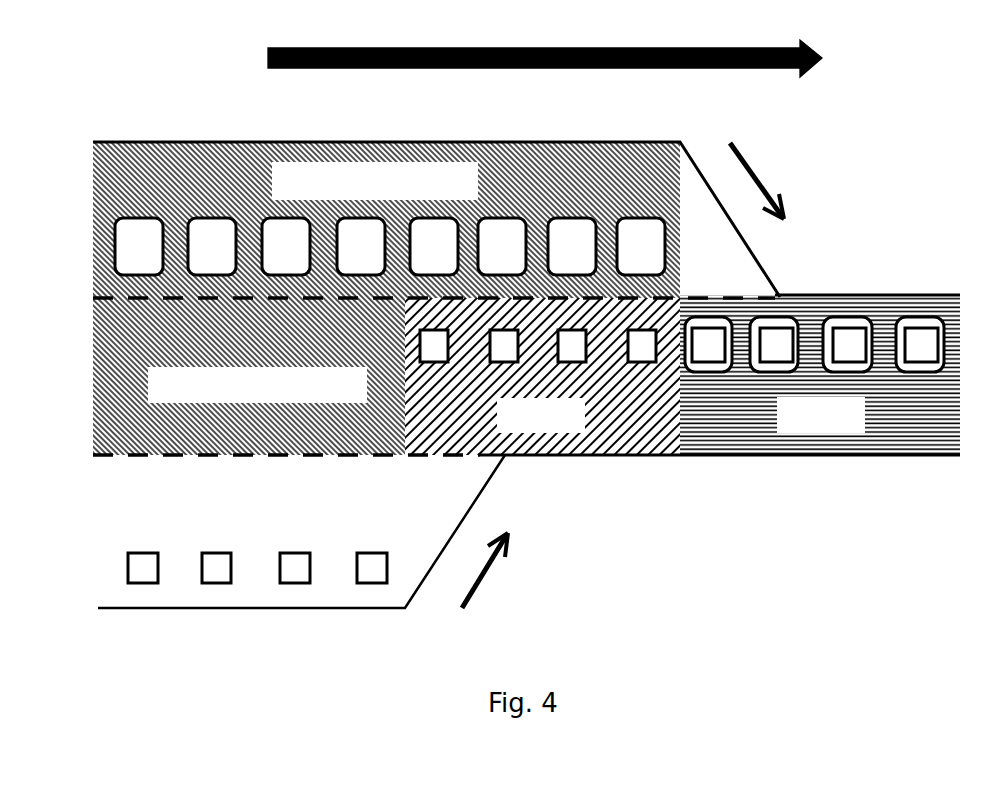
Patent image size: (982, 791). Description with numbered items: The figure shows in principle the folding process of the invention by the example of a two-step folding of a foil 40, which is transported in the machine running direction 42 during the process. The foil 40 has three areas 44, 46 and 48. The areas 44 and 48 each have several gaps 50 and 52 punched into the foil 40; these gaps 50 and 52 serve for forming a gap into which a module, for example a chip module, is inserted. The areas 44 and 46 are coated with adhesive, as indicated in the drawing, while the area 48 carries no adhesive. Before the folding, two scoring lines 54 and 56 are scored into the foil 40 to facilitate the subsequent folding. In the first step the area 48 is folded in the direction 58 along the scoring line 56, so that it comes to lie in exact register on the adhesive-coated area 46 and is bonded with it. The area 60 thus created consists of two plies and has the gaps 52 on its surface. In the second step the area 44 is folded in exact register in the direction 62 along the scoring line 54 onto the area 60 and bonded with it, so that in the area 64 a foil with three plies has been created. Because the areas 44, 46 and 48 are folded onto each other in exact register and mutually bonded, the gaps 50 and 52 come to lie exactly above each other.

The foil 40 is at (141, 103).
The machine running direction 42 is at (531, 43).
The area 44 is at (93, 185).
The area 46 is at (93, 380).
The area 48 is at (95, 546).
The gaps 50 is at (140, 247).
The gaps 52 is at (144, 583).
The scoring line 54 is at (93, 297).
The scoring line 56 is at (93, 455).
The direction 58 is at (493, 572).
The area 60 is at (603, 456).
The direction 62 is at (758, 170).
The area 64 is at (820, 456).